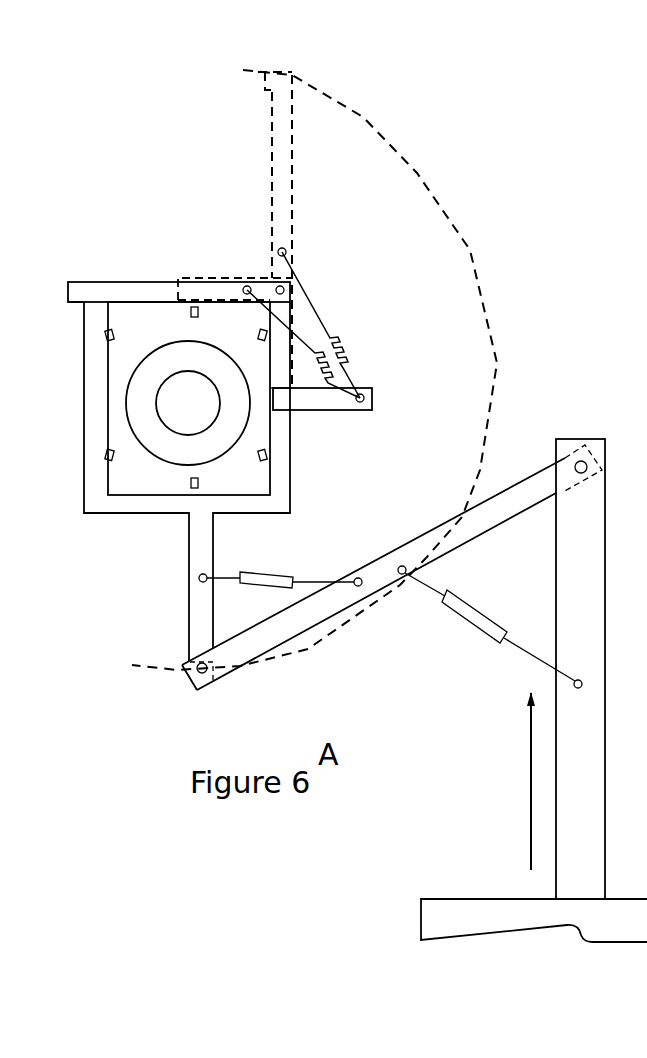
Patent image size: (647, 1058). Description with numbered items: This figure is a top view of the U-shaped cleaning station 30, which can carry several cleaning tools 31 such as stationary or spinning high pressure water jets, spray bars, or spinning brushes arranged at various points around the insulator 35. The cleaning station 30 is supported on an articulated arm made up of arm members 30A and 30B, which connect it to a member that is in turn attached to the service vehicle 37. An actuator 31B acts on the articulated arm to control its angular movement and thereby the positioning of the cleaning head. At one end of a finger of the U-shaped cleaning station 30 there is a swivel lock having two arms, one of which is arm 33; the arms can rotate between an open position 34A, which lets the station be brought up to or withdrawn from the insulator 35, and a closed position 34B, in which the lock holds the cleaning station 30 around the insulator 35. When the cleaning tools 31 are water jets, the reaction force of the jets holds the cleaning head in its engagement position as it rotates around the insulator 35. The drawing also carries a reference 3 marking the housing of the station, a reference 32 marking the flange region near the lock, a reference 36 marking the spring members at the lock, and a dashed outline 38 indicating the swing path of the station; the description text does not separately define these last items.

The cabinet housing 3 is at (296, 493).
The U-shaped cleaning station 30 is at (605, 630).
The articulated arm member 30A is at (512, 480).
The articulated arm member 30B is at (183, 608).
The cleaning tools 31 is at (205, 318).
The actuator 31B is at (460, 620).
The mounting flange 32 is at (77, 322).
The swivel lock arm 33 is at (293, 315).
The open position 34A is at (260, 142).
The closed position 34B is at (157, 278).
The insulator 35 is at (168, 360).
The springs 36 is at (347, 355).
The service vehicle 37 is at (422, 892).
The swing path 38 is at (493, 332).